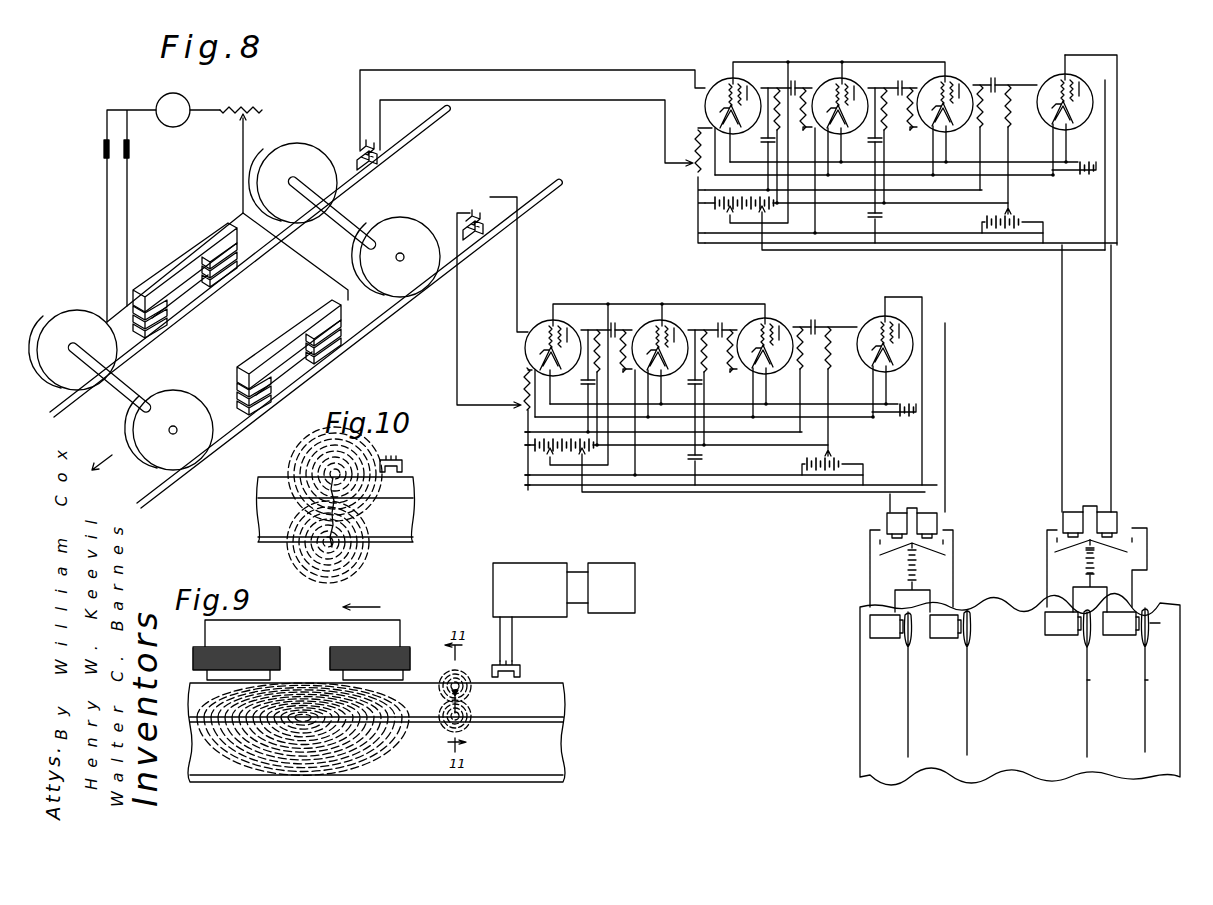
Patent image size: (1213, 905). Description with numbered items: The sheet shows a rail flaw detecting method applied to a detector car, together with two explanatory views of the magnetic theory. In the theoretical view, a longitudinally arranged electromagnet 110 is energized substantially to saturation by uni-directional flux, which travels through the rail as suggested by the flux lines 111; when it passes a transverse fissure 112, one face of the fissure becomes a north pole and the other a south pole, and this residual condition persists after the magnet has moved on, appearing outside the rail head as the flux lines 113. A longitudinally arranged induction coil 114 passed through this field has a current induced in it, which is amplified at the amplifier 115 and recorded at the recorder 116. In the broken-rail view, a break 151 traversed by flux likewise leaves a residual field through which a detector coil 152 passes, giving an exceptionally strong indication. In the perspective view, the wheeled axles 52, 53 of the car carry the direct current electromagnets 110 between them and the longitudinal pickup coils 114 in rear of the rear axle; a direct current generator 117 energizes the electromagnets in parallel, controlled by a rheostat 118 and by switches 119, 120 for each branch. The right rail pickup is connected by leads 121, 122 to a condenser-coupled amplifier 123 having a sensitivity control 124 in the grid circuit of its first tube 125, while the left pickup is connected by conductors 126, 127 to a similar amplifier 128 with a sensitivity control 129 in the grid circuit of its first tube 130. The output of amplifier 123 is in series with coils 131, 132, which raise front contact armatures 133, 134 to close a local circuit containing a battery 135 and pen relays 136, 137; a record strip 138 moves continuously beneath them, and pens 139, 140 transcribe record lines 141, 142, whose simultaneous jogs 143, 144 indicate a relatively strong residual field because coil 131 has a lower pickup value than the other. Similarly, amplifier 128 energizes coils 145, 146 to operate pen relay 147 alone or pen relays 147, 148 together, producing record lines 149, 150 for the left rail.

In FIG. 8, the wheeled axle 52 is at (112, 392).
In FIG. 8, the wheeled axle 53 is at (365, 195).
In FIG. 8, the electromagnet 110 is at (192, 258).
In FIG. 9, the electromagnet 110 is at (300, 620).
In FIG. 9, the flux lines 111 is at (372, 745).
In FIG. 9, the transverse fissure 112 is at (470, 708).
In FIG. 9, the flux lines 113 is at (460, 675).
In FIG. 8, the induction coil 114 is at (355, 155).
In FIG. 9, the induction coil 114 is at (522, 668).
In FIG. 9, the amplifier 115 is at (528, 563).
In FIG. 9, the recorder 116 is at (612, 563).
In FIG. 8, the direct current generator 117 is at (185, 124).
In FIG. 8, the rheostat 118 is at (250, 92).
In FIG. 8, the switch 119 is at (103, 148).
In FIG. 8, the switch 120 is at (130, 150).
In FIG. 8, the lead 121 is at (572, 105).
In FIG. 8, the lead 122 is at (605, 68).
In FIG. 8, the amplifier 123 is at (981, 71).
In FIG. 8, the sensitivity control 124 is at (689, 176).
In FIG. 8, the first tube 125 is at (706, 108).
In FIG. 8, the conductor 126 is at (456, 345).
In FIG. 8, the conductor 127 is at (520, 278).
In FIG. 8, the amplifier 128 is at (811, 319).
In FIG. 8, the sensitivity control 129 is at (520, 410).
In FIG. 8, the first tube 130 is at (527, 350).
In FIG. 8, the coil 131 is at (1073, 508).
In FIG. 8, the coil 132 is at (1118, 505).
In FIG. 8, the front contact armature 133 is at (1075, 560).
In FIG. 8, the front contact armature 134 is at (1110, 548).
In FIG. 8, the battery 135 is at (1080, 572).
In FIG. 8, the pen relay 136 is at (1060, 635).
In FIG. 8, the pen relay 137 is at (1123, 637).
In FIG. 8, the record strip 138 is at (1155, 598).
In FIG. 8, the pen 139 is at (1087, 648).
In FIG. 8, the pen 140 is at (1160, 623).
In FIG. 8, the record line 141 is at (1085, 747).
In FIG. 8, the record line 142 is at (1143, 735).
In FIG. 8, the jog 143 is at (1087, 680).
In FIG. 8, the jog 144 is at (1145, 680).
In FIG. 8, the coil 145 is at (885, 520).
In FIG. 8, the coil 146 is at (940, 516).
In FIG. 8, the pen relay 147 is at (880, 640).
In FIG. 8, the pen relay 148 is at (942, 640).
In FIG. 8, the record line 149 is at (906, 738).
In FIG. 8, the record line 150 is at (972, 745).
In FIG. 10, the break 151 is at (340, 510).
In FIG. 10, the detector coil 152 is at (404, 462).